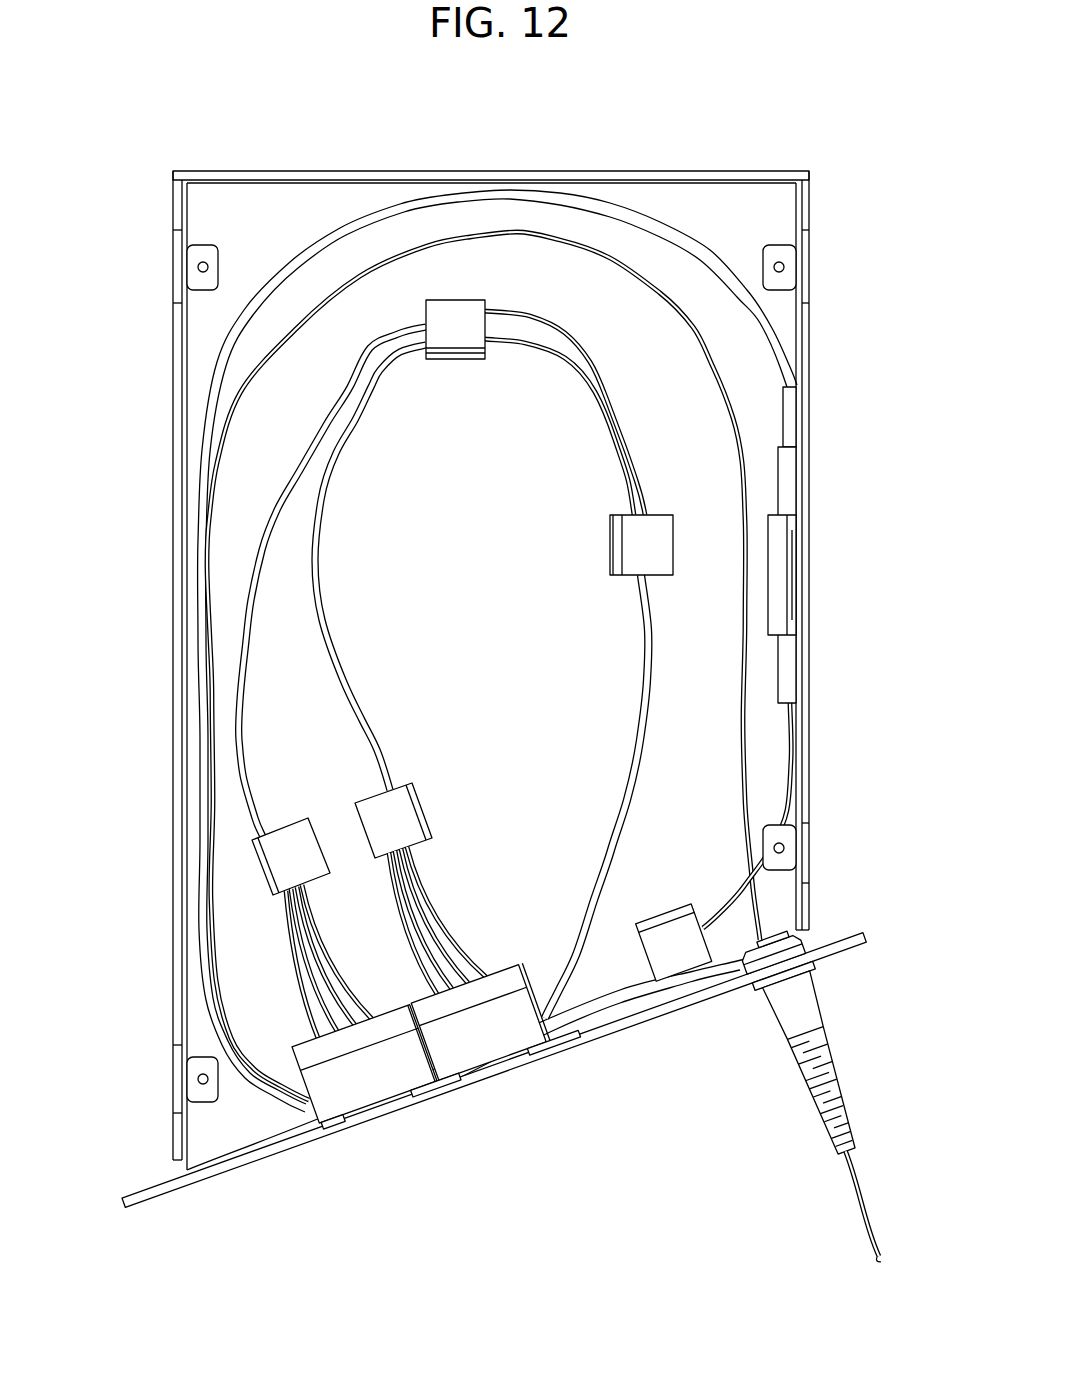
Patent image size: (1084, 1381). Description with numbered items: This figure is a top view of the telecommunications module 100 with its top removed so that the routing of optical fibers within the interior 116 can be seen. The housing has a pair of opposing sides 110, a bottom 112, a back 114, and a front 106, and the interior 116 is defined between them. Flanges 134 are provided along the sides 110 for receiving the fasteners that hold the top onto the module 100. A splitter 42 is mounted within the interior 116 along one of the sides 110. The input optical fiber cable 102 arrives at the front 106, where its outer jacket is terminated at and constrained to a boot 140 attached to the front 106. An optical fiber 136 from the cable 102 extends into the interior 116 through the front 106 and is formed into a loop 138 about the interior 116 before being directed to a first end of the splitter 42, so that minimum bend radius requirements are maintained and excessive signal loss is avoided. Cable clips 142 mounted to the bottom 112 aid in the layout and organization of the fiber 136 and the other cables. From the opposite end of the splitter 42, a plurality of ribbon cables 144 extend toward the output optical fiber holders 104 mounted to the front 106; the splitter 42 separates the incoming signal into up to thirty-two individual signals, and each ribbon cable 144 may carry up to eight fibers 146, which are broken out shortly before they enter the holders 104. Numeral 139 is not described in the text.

The telecommunications module 100 is at (140, 640).
The input optical fiber cable 102 is at (866, 1198).
The output optical fiber holders 104 is at (487, 1047).
The front 106 is at (594, 1037).
The sides 110 is at (183, 386).
The bottom 112 is at (437, 652).
The back 114 is at (305, 170).
The interior 116 is at (740, 209).
The flanges 134 is at (200, 264).
The optical fiber 136 is at (760, 916).
The loop 138 is at (606, 255).
The optical fiber 139 is at (637, 758).
The boot 140 is at (802, 1009).
The cable clips 142 is at (448, 330).
The ribbon cables 144 is at (527, 312).
The fibers 146 is at (323, 933).
The splitter 42 is at (792, 670).